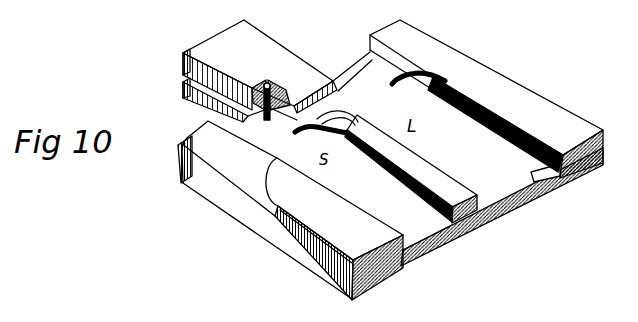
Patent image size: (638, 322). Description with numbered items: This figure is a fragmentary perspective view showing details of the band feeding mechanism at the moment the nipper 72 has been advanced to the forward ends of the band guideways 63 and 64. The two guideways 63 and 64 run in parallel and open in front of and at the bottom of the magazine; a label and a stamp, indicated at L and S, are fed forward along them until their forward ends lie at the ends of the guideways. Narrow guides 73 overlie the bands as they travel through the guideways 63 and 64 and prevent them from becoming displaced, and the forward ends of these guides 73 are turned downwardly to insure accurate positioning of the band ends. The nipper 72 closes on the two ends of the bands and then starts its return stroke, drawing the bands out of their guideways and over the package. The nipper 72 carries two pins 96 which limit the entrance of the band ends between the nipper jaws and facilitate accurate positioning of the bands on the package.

The guideway 63 is at (453, 228).
The guideway 64 is at (541, 183).
The nipper 72 is at (238, 33).
The narrow guides 73 is at (521, 85).
The pins 96 is at (286, 72).